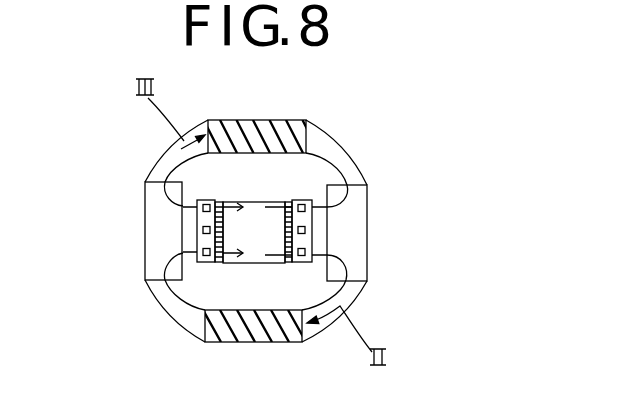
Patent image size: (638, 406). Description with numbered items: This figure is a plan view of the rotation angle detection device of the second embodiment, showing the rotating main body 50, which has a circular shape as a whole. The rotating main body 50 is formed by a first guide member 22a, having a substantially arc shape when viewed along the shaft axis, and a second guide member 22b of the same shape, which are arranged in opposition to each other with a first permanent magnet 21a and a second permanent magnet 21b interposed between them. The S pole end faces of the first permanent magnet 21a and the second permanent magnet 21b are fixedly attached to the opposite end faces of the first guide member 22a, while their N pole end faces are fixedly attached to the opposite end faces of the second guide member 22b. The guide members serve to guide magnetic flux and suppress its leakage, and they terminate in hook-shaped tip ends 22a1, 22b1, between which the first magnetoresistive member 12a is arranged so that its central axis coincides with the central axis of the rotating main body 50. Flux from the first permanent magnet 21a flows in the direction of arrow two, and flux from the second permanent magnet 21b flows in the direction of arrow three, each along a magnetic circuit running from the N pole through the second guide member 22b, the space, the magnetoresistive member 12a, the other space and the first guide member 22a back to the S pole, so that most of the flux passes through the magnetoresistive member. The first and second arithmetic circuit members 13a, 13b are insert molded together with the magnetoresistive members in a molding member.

The rotating main body 50 is at (370, 253).
The first permanent magnet 21a is at (255, 343).
The second permanent magnet 21b is at (247, 120).
The first guide member 22a is at (378, 231).
The second guide member 22b is at (133, 231).
The hook-shaped tip end 22a1 is at (368, 218).
The hook-shaped tip end 22b1 is at (145, 228).
The first magnetoresistive member 12a is at (252, 215).
The first arithmetic circuit member 13a is at (355, 232).
The second arithmetic circuit member 13b is at (196, 219).